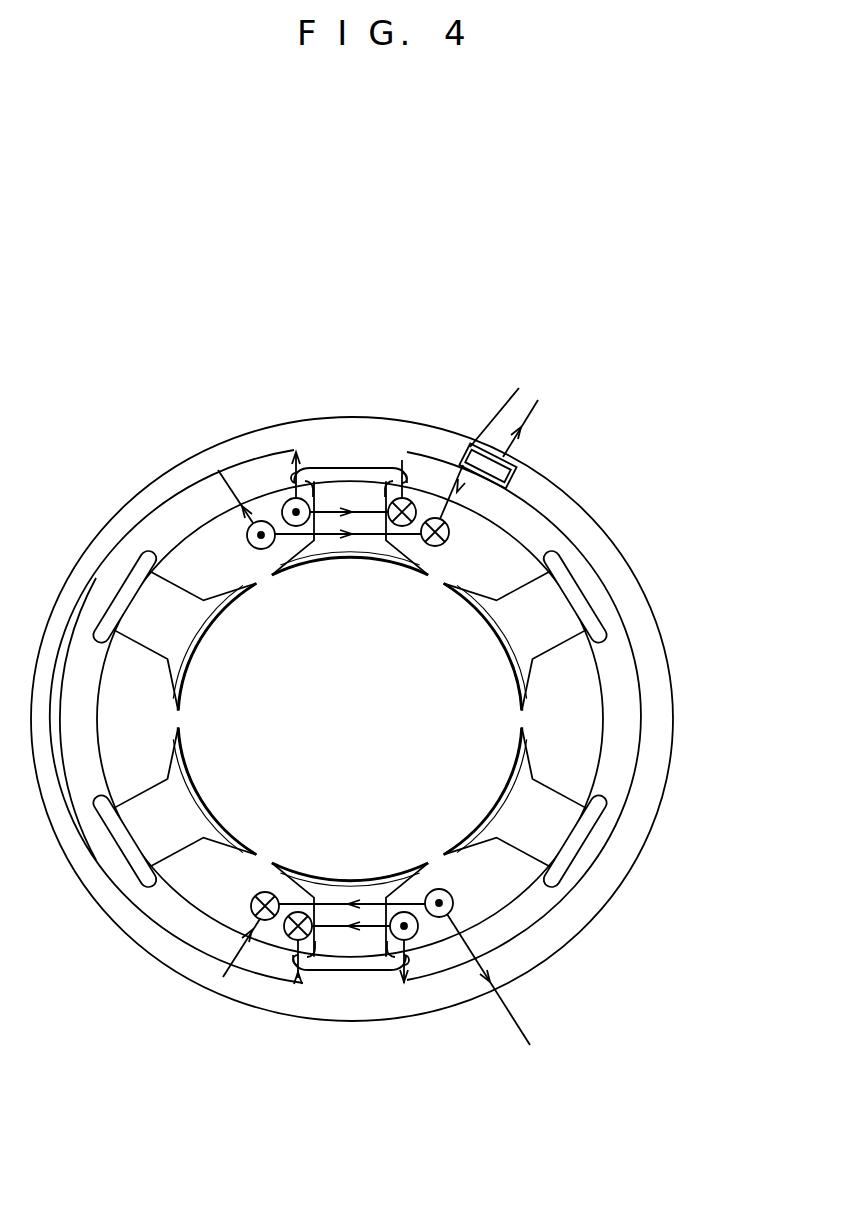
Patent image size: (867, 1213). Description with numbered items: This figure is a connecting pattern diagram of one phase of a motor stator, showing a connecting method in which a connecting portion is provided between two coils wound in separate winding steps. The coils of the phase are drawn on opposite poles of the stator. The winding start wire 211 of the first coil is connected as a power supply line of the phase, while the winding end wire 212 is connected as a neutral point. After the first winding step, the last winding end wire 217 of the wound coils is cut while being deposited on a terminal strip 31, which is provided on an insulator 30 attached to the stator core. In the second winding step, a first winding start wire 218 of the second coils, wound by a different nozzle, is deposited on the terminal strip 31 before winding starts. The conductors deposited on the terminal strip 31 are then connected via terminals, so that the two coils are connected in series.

The insulator 30 is at (652, 603).
The terminal strip 31 is at (510, 461).
The winding start wire 211 is at (402, 458).
The winding end wire 212 is at (533, 1043).
The last winding end wire 217 is at (538, 400).
The first winding start wire 218 is at (519, 388).